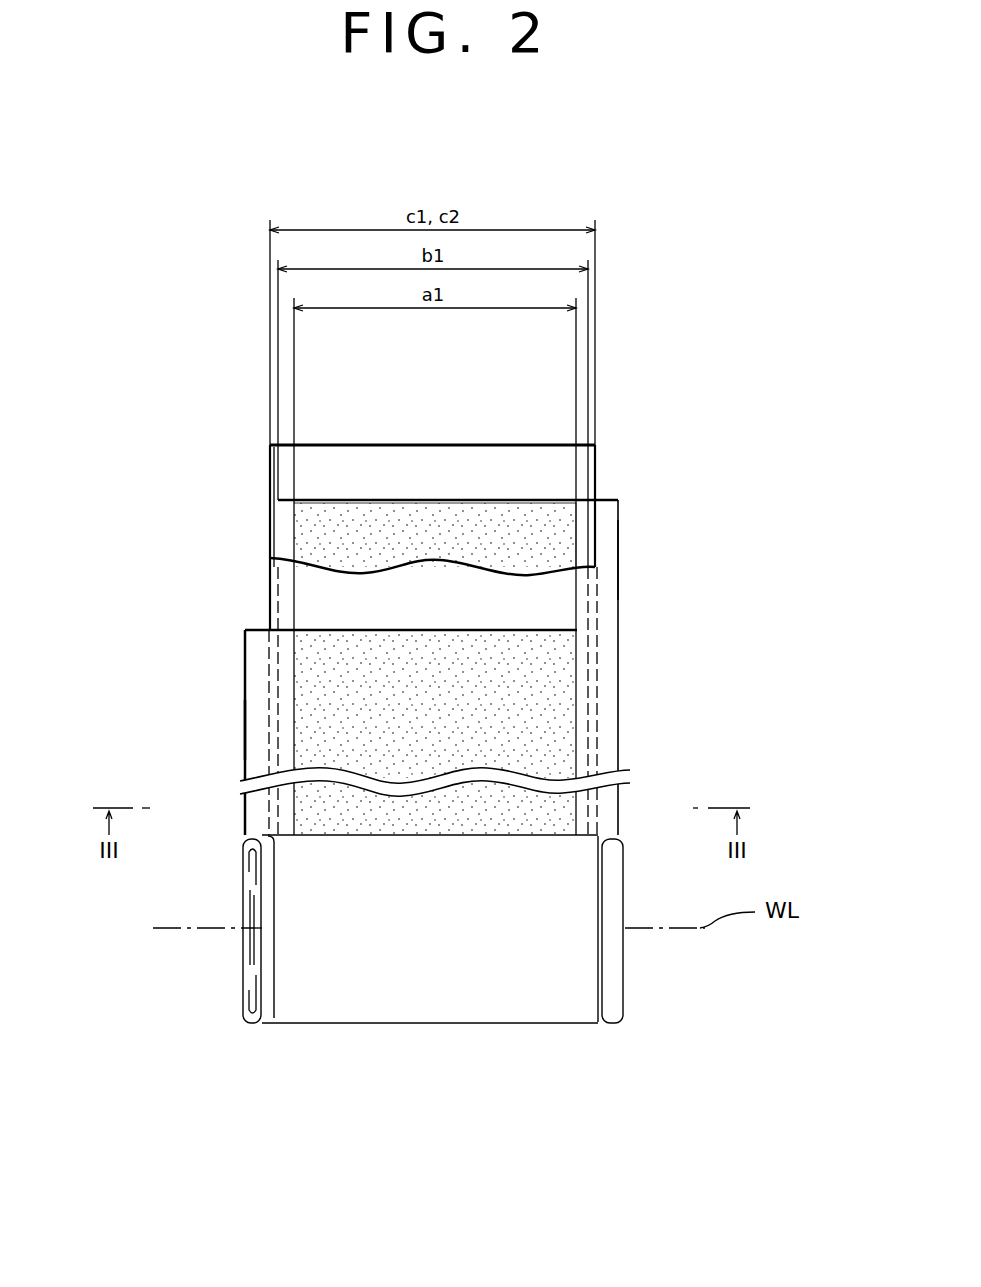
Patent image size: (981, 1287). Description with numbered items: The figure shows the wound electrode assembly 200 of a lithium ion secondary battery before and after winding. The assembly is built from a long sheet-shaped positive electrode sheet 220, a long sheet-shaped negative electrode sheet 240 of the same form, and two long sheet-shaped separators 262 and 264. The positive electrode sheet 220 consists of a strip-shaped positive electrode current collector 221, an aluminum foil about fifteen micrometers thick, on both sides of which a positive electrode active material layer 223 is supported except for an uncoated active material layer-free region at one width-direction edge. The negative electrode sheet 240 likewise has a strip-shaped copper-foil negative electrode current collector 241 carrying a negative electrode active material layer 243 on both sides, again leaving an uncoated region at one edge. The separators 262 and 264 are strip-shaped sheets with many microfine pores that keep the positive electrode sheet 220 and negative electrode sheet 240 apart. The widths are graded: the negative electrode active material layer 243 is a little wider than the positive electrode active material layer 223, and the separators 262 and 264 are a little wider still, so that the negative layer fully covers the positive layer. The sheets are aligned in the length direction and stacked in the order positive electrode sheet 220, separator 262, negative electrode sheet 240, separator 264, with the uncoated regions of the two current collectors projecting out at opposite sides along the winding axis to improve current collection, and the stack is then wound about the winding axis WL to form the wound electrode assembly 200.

The wound electrode assembly 200 is at (464, 1006).
The positive electrode sheet 220 is at (238, 676).
The positive electrode current collector 221 is at (422, 628).
The positive electrode active material layer 223 is at (318, 720).
The negative electrode sheet 240 is at (630, 509).
The negative electrode current collector 241 is at (422, 498).
The negative electrode active material layer 243 is at (531, 515).
The separator 262 is at (286, 602).
The separator 264 is at (287, 472).